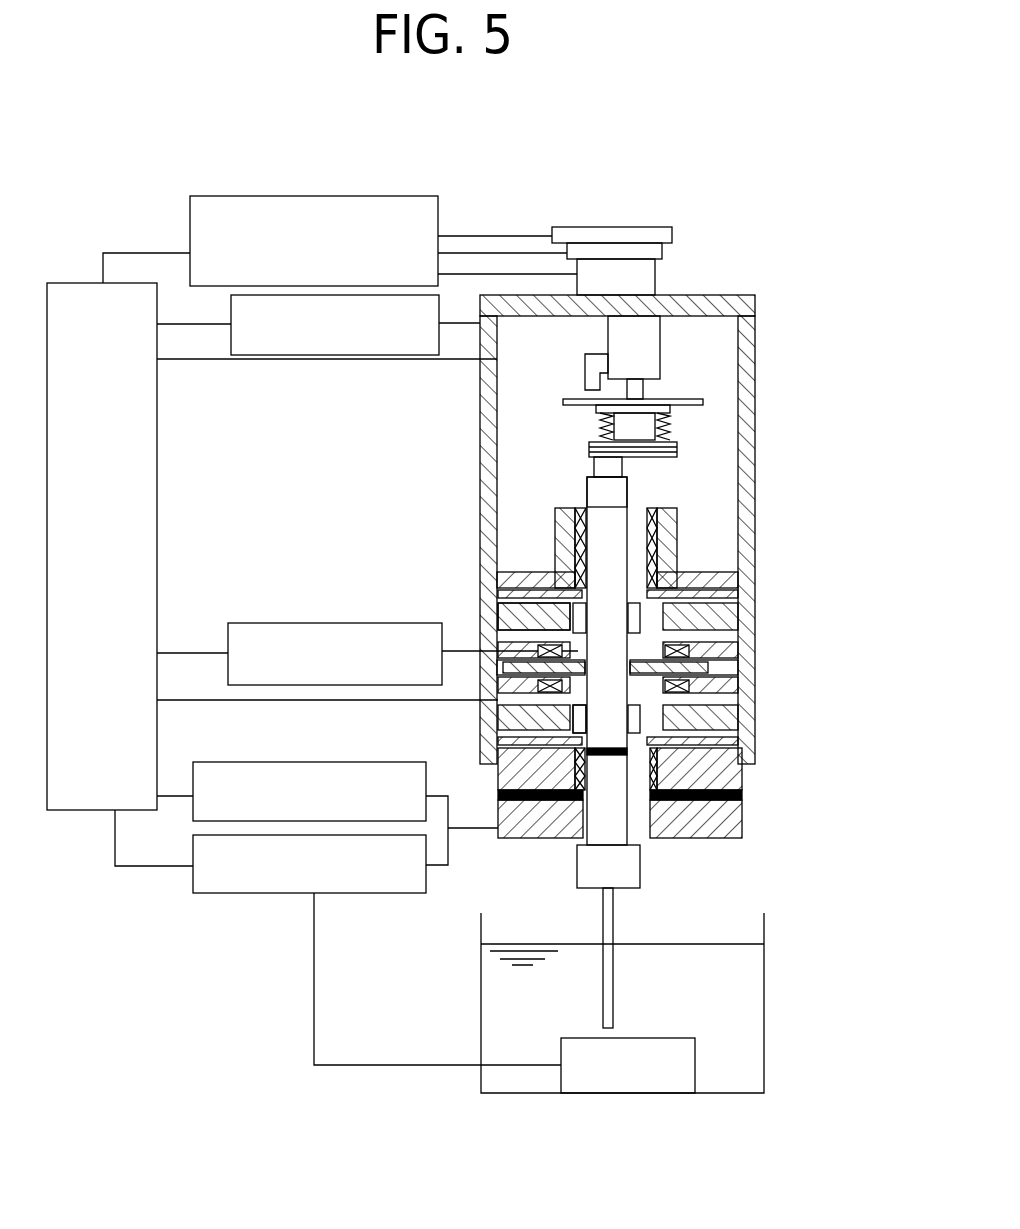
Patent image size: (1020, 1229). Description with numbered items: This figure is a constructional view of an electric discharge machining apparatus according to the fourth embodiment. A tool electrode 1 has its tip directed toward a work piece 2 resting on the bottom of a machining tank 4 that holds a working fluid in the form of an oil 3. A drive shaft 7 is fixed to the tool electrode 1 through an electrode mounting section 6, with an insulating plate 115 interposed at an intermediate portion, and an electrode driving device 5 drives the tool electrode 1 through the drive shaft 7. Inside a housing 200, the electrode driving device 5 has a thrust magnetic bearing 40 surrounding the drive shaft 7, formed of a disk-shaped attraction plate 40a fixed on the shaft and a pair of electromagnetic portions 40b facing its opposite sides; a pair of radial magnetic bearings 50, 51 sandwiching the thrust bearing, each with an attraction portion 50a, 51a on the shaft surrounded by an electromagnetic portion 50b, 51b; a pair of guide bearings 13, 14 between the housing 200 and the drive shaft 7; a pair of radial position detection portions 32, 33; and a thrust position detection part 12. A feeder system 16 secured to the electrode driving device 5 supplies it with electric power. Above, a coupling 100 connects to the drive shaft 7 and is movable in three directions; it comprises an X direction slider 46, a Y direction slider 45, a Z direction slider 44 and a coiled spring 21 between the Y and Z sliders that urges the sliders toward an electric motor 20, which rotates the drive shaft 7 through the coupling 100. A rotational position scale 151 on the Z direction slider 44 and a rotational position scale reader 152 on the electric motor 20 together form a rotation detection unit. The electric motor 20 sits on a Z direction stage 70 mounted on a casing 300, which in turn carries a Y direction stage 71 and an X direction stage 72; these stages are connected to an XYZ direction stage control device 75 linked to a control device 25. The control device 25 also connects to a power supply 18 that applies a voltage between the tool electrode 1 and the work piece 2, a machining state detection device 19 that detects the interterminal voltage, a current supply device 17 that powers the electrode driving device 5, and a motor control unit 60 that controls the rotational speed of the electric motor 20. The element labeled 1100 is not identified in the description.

The tool electrode 1 is at (614, 919).
The work piece 2 is at (695, 1065).
The oil 3 is at (722, 940).
The machining tank 4 is at (764, 972).
The electrode driving device 5 is at (607, 648).
The electrode mounting section 6 is at (640, 866).
The drive shaft 7 is at (505, 512).
The thrust position detection part 12 is at (498, 722).
The auxiliary or guide bearing 13 is at (665, 530).
The auxiliary or guide bearing 14 is at (660, 775).
The feeder system 16 is at (742, 823).
The current supply device 17 is at (335, 623).
The power supply 18 is at (225, 893).
The machining state detection device 19 is at (343, 762).
The electric motor 20 is at (660, 346).
The coiled spring 21 is at (588, 443).
The control device 25 is at (73, 283).
The radial position detection portion 32 is at (720, 588).
The radial position detection portion 33 is at (740, 740).
The thrust magnetic bearing 40 is at (505, 666).
The attraction plate 40a is at (498, 650).
The electromagnetic portion 40b is at (723, 645).
The Z direction slider 44 is at (703, 403).
The Y direction slider 45 is at (670, 433).
The X direction slider 46 is at (678, 458).
The radial magnetic bearing 50 is at (717, 618).
The attraction portion 50a is at (677, 572).
The electromagnetic portion 50b is at (700, 596).
The radial magnetic bearing 51 is at (573, 716).
The attraction portion 51a is at (640, 716).
The electromagnetic portion 51b is at (573, 727).
The motor control unit 60 is at (231, 311).
The Z direction stage 70 is at (655, 285).
The Y direction stage 71 is at (663, 253).
The X direction stage 72 is at (622, 227).
The XYZ direction stage control device 75 is at (313, 196).
The coupling 100 is at (594, 462).
The insulating plate 115 is at (715, 720).
The rotational position scale 151 is at (672, 397).
The rotational position scale reader 152 is at (585, 378).
The housing 200 is at (530, 615).
The casing 300 is at (713, 303).
The spring holder 1100 is at (600, 425).